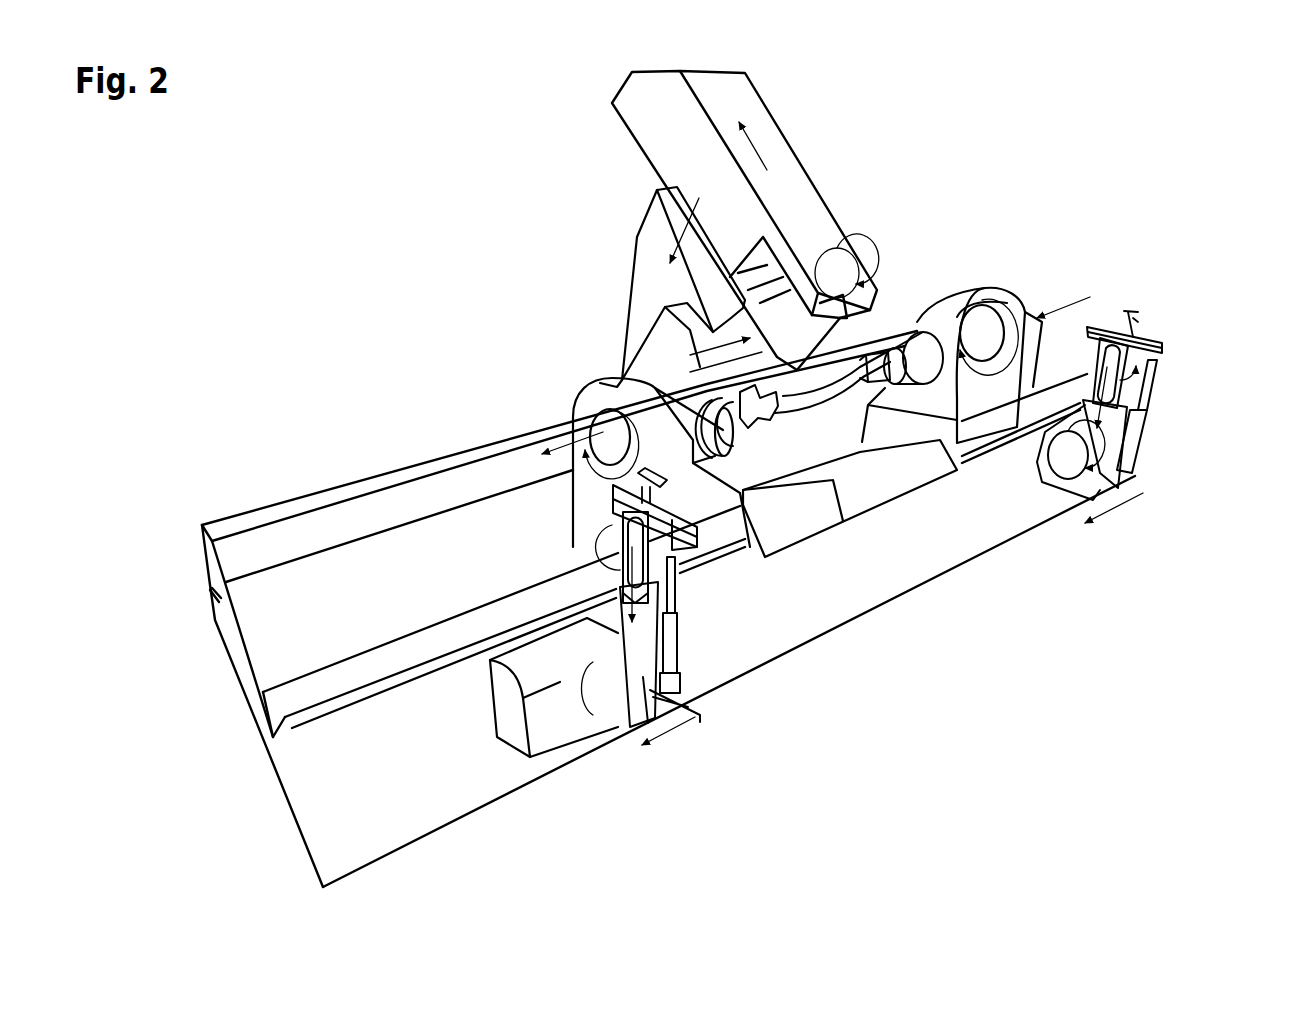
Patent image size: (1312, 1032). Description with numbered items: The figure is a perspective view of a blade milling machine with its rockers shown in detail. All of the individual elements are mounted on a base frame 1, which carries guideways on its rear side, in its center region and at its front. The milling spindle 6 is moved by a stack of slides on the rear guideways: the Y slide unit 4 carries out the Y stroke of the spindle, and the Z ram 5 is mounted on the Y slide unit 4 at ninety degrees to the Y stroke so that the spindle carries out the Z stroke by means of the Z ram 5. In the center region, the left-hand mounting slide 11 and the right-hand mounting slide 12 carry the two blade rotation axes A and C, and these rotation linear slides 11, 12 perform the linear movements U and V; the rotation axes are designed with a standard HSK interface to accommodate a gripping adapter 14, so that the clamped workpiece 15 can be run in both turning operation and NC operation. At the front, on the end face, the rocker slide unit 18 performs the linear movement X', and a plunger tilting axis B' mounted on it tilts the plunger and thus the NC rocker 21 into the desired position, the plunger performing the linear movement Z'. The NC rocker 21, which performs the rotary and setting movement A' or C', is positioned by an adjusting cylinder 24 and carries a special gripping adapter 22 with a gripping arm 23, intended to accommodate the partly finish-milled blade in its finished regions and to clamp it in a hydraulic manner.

The base frame 1 is at (333, 592).
The Y slide unit 4 is at (652, 283).
The Z ram 5 is at (792, 193).
The milling spindle 6 is at (563, 182).
The left-hand mounting slide 11 is at (655, 398).
The right-hand mounting slide 12 is at (998, 295).
The gripping adapter 14 is at (922, 343).
The workpiece 15 is at (833, 392).
The left-hand rocker slide unit 18 is at (557, 727).
The NC rocker 21 is at (613, 486).
The special gripping adapter 22 is at (675, 545).
The gripping arm 23 is at (667, 488).
The adjusting cylinder 24 is at (675, 632).